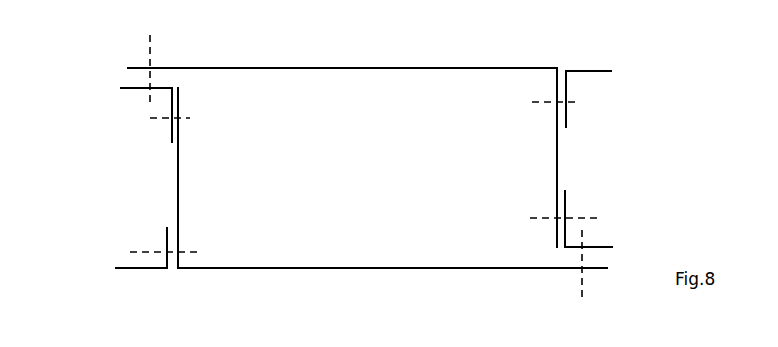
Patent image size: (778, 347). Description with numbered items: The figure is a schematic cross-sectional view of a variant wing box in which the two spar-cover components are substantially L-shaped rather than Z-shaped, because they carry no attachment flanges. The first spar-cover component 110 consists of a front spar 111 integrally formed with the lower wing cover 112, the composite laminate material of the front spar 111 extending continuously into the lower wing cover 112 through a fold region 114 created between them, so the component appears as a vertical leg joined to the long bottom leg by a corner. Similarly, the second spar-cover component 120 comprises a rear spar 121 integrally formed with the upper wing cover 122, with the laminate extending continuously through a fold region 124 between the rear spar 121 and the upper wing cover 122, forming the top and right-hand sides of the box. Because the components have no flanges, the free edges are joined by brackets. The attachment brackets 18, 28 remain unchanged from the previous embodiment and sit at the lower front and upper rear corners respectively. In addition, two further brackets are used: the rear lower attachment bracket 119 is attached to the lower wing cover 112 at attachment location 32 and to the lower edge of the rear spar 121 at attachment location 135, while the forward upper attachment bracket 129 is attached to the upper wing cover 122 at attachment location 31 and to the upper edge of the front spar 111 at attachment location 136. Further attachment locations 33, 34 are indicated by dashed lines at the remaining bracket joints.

The attachment bracket 18 is at (122, 268).
The attachment bracket 28 is at (597, 73).
The attachment location 31 is at (150, 50).
The attachment location 32 is at (582, 298).
The horizontal reference axis 33 is at (185, 252).
The horizontal reference axis 34 is at (533, 102).
The first spar-cover component 110 is at (330, 268).
The front spar 111 is at (178, 202).
The lower wing cover 112 is at (453, 268).
The fold region 114 is at (178, 268).
The rear lower attachment bracket 119 is at (602, 247).
The second spar-cover component 120 is at (298, 68).
The rear spar 121 is at (557, 158).
The upper wing cover 122 is at (433, 68).
The fold region 124 is at (557, 68).
The forward upper attachment bracket 129 is at (137, 88).
The attachment location 135 is at (532, 218).
The attachment location 136 is at (190, 118).